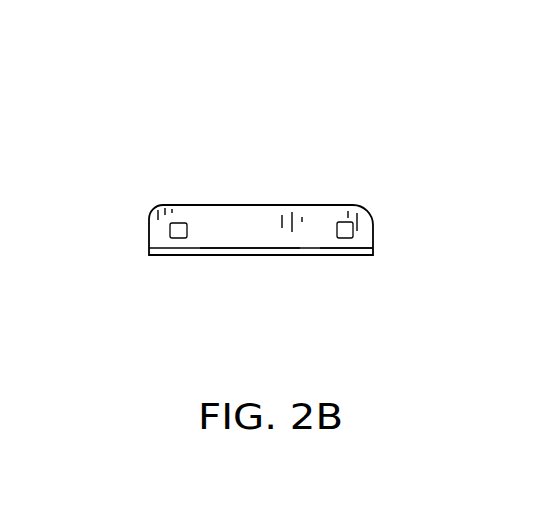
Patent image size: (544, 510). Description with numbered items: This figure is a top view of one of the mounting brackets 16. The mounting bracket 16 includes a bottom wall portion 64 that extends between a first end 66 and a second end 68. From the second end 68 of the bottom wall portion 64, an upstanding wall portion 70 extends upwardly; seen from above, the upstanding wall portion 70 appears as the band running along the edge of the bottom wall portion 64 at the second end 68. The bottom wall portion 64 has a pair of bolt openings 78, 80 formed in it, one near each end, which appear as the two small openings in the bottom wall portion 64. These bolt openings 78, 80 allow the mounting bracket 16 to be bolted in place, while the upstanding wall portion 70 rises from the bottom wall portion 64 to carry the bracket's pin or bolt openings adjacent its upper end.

The mounting bracket 16 is at (314, 176).
The bottom wall portion 64 is at (250, 206).
The first end 66 is at (325, 205).
The bolt opening 80 is at (353, 222).
The second end 68 is at (352, 247).
The bolt opening 78 is at (170, 232).
The upstanding wall portion 70 is at (263, 248).